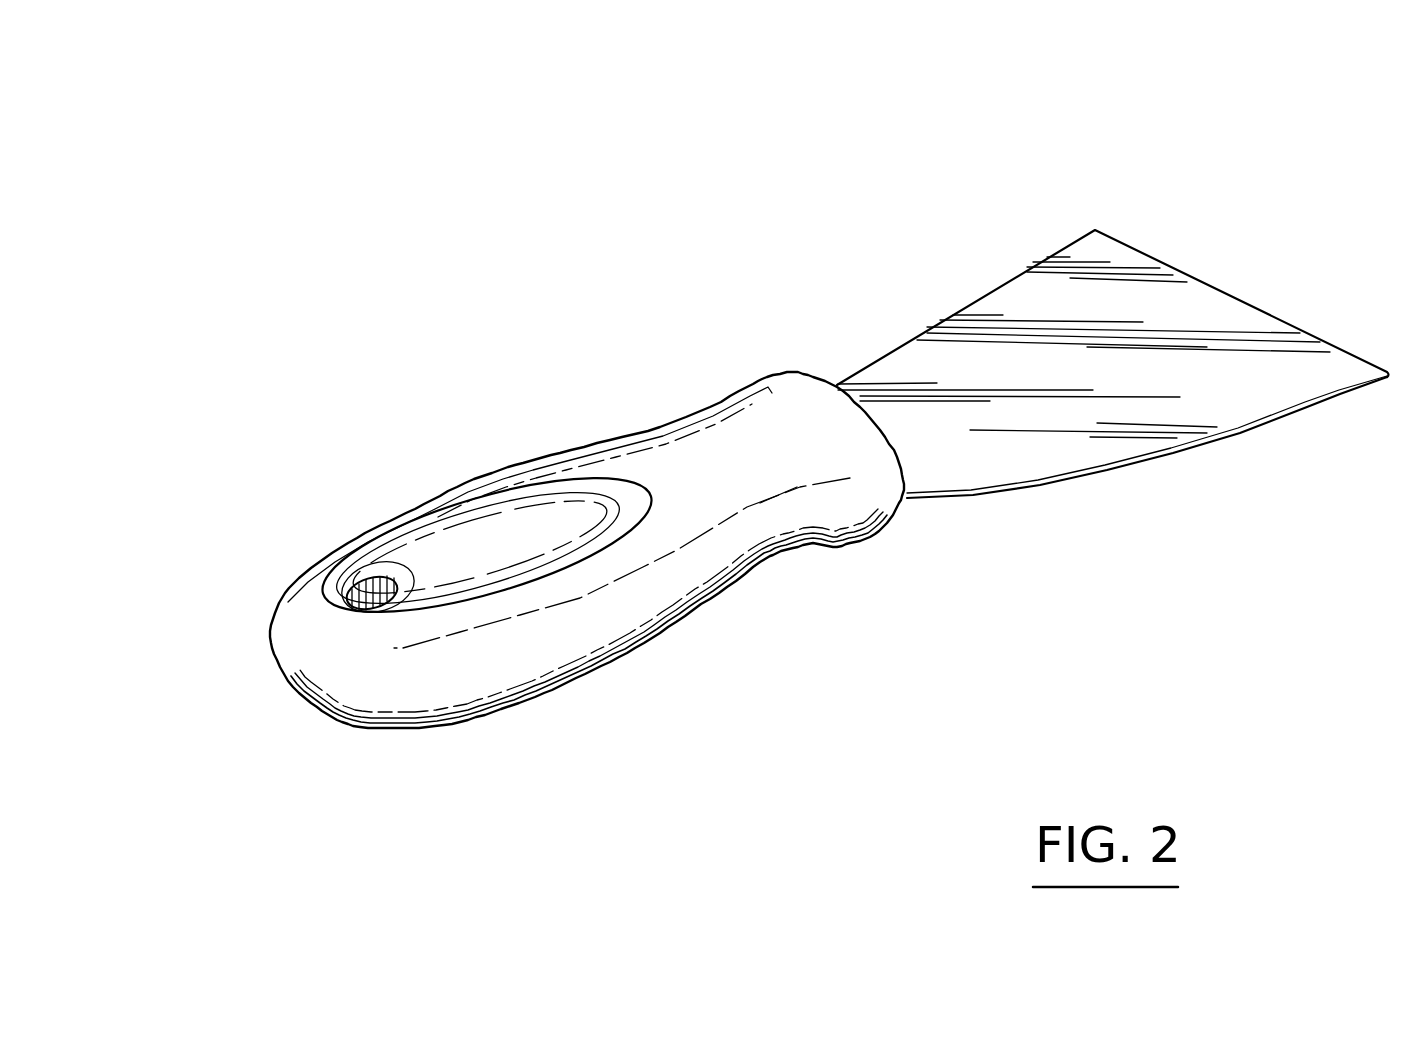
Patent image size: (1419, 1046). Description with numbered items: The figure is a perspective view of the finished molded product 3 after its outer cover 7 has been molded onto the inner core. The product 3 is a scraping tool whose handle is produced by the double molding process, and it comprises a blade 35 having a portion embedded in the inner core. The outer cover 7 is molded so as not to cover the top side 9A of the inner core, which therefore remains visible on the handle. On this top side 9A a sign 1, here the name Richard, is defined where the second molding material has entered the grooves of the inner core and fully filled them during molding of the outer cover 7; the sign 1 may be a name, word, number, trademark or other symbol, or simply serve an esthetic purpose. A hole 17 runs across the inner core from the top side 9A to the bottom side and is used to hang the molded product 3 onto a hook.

The product 3 is at (265, 730).
The outer cover 7 is at (650, 593).
The top side 9A is at (583, 510).
The sign 1 is at (488, 523).
The hole 17 is at (375, 587).
The blade 35 is at (1003, 298).